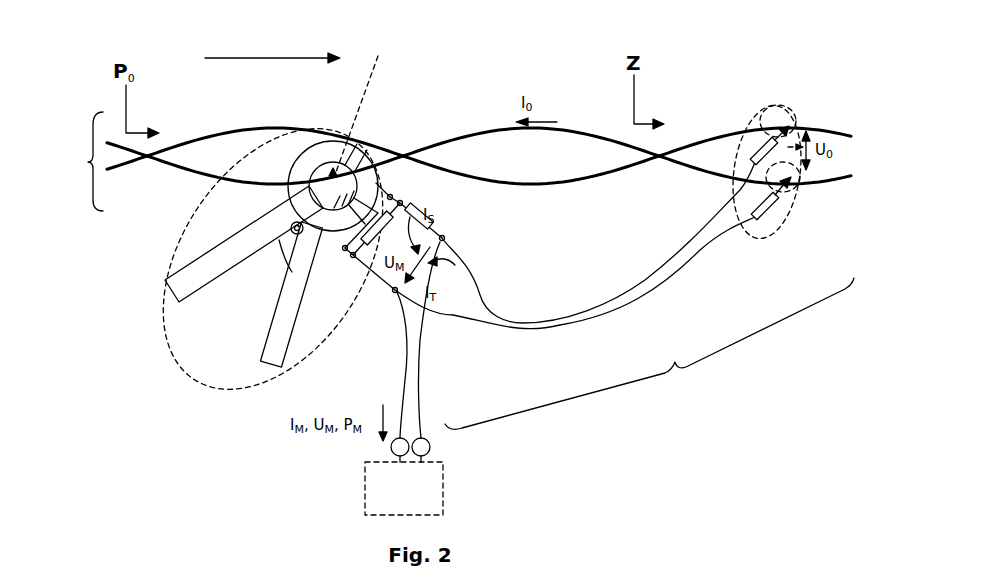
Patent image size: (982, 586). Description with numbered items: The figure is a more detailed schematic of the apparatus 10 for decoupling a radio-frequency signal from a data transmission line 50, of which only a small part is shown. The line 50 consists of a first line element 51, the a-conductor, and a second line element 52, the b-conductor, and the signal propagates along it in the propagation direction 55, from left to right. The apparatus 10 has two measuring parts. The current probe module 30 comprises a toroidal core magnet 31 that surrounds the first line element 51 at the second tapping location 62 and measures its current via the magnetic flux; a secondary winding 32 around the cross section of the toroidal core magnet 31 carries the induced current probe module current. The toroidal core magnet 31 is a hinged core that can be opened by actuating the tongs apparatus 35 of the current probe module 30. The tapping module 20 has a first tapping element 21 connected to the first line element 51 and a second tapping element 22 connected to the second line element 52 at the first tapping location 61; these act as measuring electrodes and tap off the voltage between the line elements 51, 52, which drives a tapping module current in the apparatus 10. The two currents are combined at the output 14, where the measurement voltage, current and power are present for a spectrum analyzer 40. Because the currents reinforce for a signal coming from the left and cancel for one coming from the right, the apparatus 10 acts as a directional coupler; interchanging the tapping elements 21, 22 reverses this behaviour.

The apparatus 10 is at (624, 295).
The output 14 is at (440, 448).
The tapping module 20 is at (760, 232).
The first tapping element 21 is at (748, 190).
The second tapping element 22 is at (772, 105).
The current probe module 30 is at (213, 389).
The toroidal core magnet 31 is at (313, 143).
The secondary winding 32 is at (384, 157).
The tongs apparatus 35 is at (190, 283).
The spectrum analyzer 40 is at (404, 488).
The data transmission line 50 is at (73, 161).
The first line element 51 is at (202, 175).
The second line element 52 is at (258, 128).
The propagation direction 55 is at (290, 55).
The first tapping location 61 is at (800, 122).
The second tapping location 62 is at (368, 103).